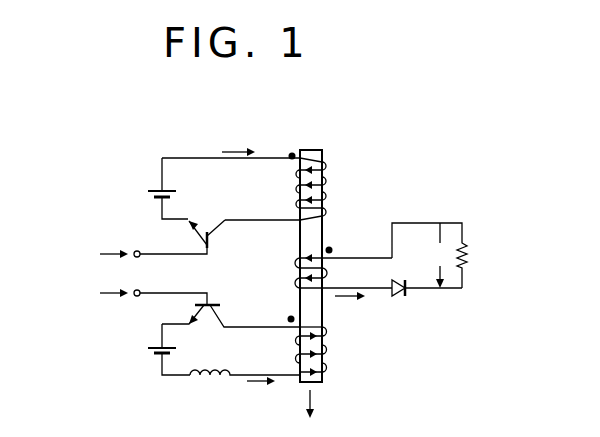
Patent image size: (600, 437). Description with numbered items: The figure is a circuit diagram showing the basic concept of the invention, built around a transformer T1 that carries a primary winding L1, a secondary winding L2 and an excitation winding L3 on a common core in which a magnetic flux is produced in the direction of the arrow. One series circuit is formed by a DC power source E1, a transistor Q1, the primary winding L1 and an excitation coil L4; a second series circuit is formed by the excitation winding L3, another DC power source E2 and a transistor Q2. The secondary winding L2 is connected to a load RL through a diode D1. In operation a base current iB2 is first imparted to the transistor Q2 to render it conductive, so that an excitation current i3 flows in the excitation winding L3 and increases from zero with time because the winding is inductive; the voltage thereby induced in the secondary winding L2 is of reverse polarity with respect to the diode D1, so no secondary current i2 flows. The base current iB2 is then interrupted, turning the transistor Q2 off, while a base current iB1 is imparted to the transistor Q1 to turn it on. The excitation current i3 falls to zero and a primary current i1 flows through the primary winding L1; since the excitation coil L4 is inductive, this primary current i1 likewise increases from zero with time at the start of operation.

The transformer T1 is at (311, 255).
The primary winding L1 is at (297, 346).
The secondary winding L2 is at (343, 268).
The excitation winding L3 is at (244, 187).
The excitation coil L4 is at (245, 393).
The transistor Q1 is at (220, 302).
The transistor Q2 is at (195, 237).
The DC power source E1 is at (155, 349).
The DC power source E2 is at (156, 188).
The diode D1 is at (427, 303).
The load RL is at (442, 255).
The output voltage Eo is at (438, 255).
The primary current i1 is at (261, 397).
The secondary current i2 is at (350, 312).
The excitation current i3 is at (238, 143).
The base current iB1 is at (102, 299).
The base current iB2 is at (102, 257).